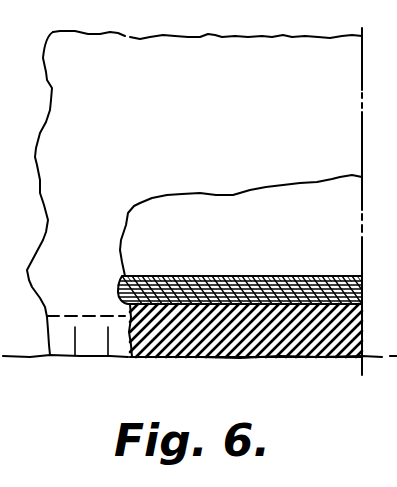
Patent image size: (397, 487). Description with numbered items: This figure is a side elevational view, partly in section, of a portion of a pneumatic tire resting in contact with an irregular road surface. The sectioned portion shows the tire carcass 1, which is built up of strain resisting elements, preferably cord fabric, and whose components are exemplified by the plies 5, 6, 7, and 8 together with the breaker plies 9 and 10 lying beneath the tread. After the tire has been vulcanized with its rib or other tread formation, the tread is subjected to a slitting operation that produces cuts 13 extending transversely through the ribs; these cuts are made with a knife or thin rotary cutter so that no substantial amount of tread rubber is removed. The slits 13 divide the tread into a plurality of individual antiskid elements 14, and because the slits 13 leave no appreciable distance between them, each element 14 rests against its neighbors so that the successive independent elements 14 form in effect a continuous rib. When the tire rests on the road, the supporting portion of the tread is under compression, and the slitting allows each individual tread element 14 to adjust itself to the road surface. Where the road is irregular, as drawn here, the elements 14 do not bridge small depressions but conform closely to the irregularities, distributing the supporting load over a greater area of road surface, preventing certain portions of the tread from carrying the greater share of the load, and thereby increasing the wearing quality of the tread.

The carcass 1 is at (146, 274).
The ply 5 is at (181, 283).
The ply 6 is at (203, 290).
The ply 7 is at (218, 296).
The ply 8 is at (233, 300).
The breaker ply 9 is at (250, 303).
The breaker ply 10 is at (268, 303).
The cuts 13 is at (256, 350).
The antiskid elements 14 is at (217, 352).